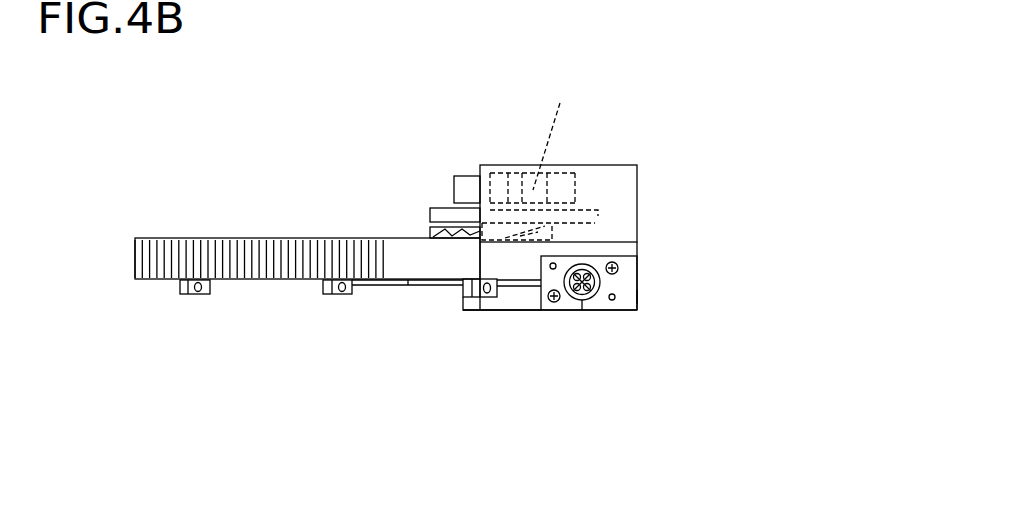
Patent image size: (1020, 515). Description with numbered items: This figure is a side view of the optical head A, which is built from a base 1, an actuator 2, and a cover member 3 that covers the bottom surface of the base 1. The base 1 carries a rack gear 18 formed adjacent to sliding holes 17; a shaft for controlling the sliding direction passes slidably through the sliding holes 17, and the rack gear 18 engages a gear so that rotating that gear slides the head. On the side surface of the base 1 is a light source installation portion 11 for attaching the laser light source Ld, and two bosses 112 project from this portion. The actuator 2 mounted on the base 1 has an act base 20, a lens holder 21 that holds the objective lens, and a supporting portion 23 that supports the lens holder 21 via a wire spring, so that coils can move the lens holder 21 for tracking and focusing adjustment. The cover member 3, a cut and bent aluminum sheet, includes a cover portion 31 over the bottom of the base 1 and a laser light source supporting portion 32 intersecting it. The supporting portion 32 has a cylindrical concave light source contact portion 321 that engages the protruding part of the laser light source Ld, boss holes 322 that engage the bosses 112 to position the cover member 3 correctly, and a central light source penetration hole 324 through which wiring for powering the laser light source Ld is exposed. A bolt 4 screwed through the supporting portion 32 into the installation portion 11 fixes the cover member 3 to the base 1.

The optical head A is at (213, 130).
The base 1 is at (345, 238).
The rack gear 18 is at (268, 263).
The sliding holes 17 is at (185, 295).
The actuator 2 is at (443, 195).
The act base 20 is at (445, 213).
The lens holder 21 is at (470, 190).
The supporting portion 23 is at (540, 156).
The light source installation portion 11 is at (612, 307).
The cover member 3 is at (465, 313).
The cover portion 31 is at (480, 310).
The laser light source supporting portion 32 is at (636, 292).
The light source penetration hole 324 is at (596, 298).
The light source contact portion 321 is at (573, 312).
The laser light source Ld is at (585, 312).
The bolt 4 is at (618, 265).
The boss holes 322 is at (556, 264).
The bosses 112 is at (616, 297).